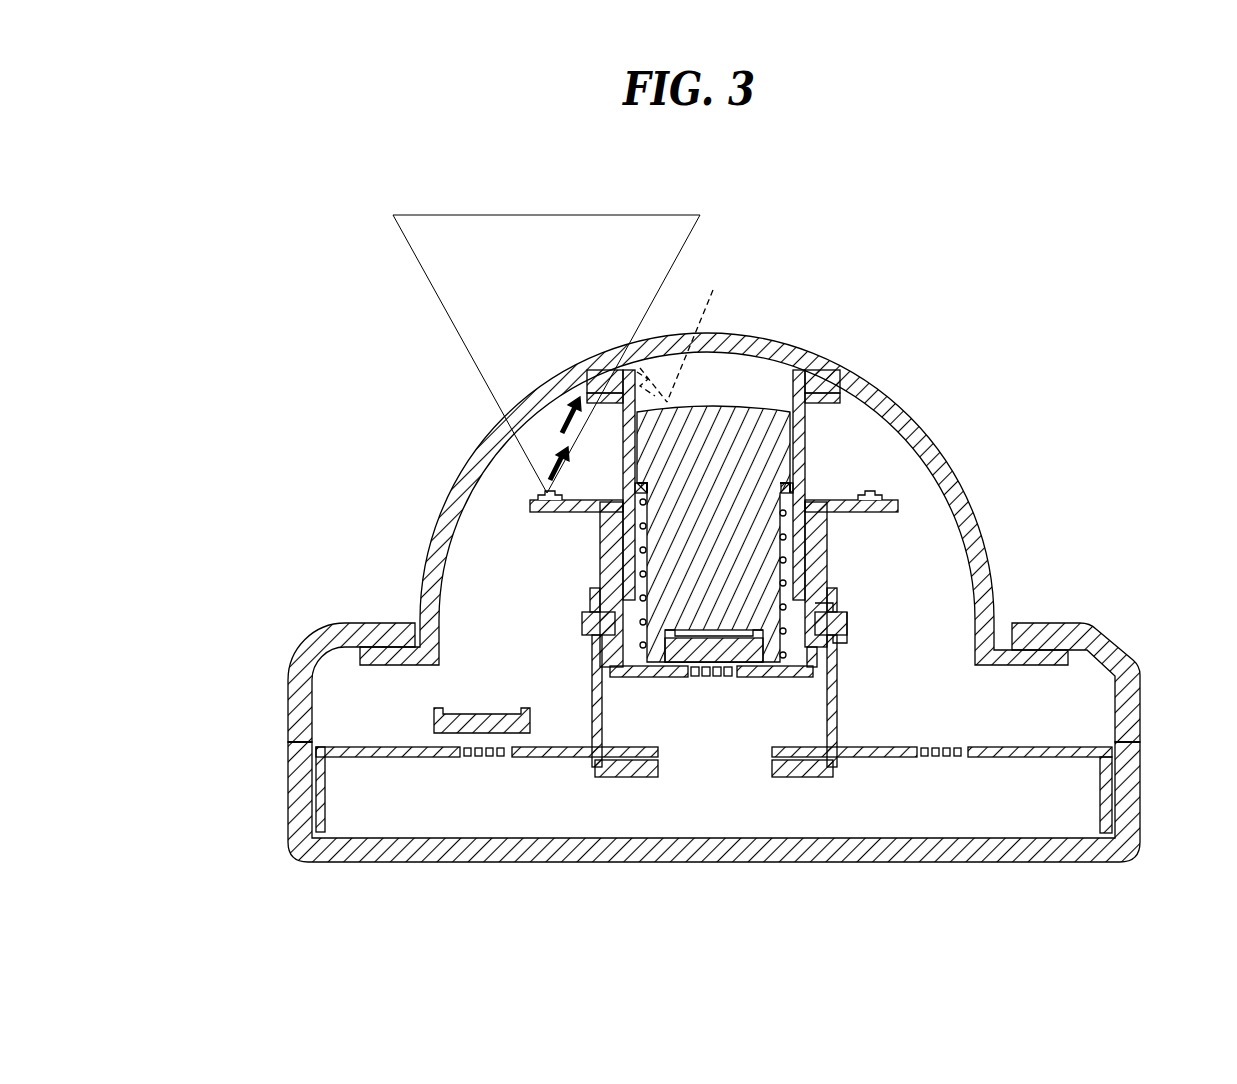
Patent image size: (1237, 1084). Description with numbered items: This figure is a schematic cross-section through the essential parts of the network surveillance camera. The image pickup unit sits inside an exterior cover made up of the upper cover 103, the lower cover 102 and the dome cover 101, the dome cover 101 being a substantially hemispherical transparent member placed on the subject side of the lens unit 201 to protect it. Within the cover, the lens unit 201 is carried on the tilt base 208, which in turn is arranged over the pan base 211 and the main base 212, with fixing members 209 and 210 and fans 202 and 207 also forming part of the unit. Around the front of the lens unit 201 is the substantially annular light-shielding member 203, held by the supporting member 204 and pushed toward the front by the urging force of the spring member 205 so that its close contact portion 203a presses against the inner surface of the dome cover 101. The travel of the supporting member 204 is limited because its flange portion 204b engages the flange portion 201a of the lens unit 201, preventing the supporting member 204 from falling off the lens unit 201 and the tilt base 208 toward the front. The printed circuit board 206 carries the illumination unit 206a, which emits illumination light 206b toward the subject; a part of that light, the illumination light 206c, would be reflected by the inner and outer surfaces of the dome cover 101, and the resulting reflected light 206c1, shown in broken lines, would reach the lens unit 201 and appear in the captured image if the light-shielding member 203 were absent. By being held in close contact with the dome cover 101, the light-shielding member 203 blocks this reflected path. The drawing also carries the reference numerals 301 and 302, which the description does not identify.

The dome cover 101 is at (767, 346).
The lower cover 102 is at (392, 630).
The upper cover 103 is at (352, 858).
The lens unit 201 is at (750, 447).
The flange portion 201a is at (787, 488).
The fan 202 is at (708, 656).
The light-shielding member 203 is at (840, 387).
The close contact portion 203a is at (832, 381).
The supporting member 204 is at (804, 433).
The flange portion 204b is at (792, 487).
The spring member 205 is at (618, 570).
The printed circuit board 206 is at (898, 503).
The illumination unit 206a is at (547, 493).
The illumination light 206b is at (440, 298).
The illumination light 206c is at (553, 463).
The reflected light 206c1 is at (691, 332).
The fan 207 is at (435, 725).
The tilt base 208 is at (820, 567).
The fixing member 209 is at (847, 630).
The fixing member 210 is at (782, 755).
The pan base 211 is at (837, 722).
The main base 212 is at (1058, 753).
The gap 301 is at (705, 377).
The space 302 is at (502, 530).